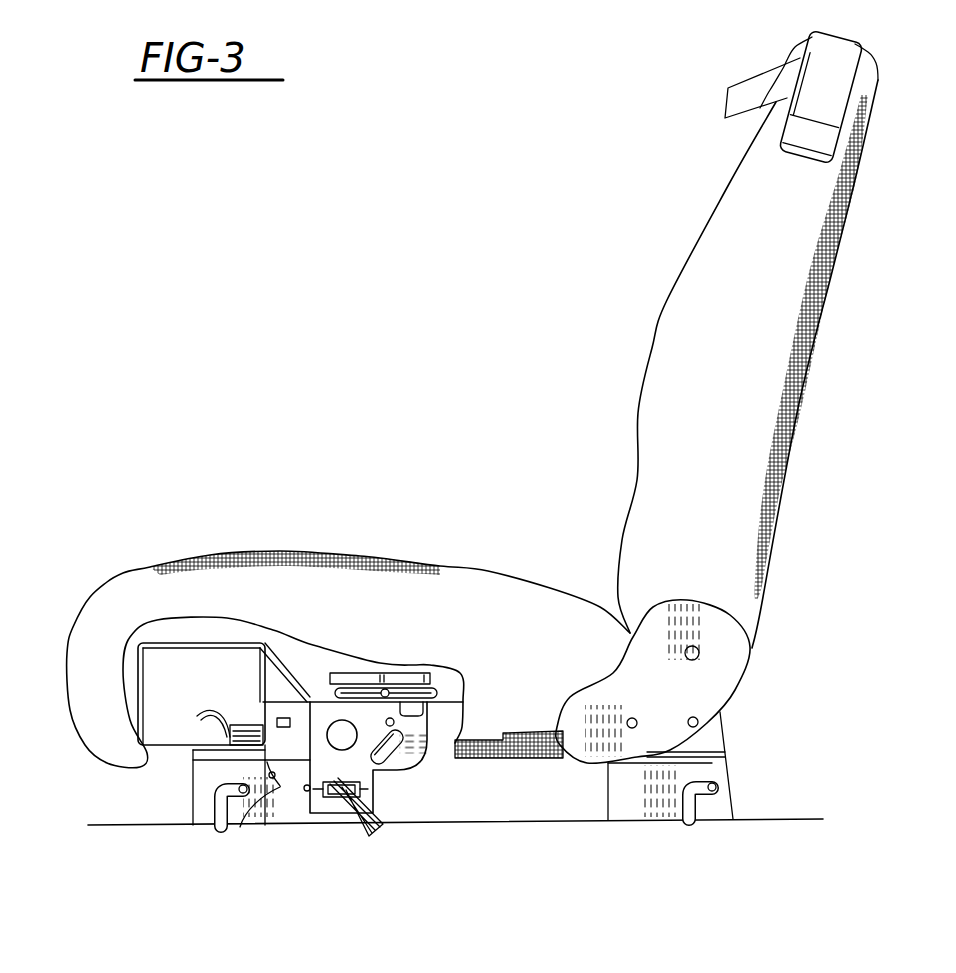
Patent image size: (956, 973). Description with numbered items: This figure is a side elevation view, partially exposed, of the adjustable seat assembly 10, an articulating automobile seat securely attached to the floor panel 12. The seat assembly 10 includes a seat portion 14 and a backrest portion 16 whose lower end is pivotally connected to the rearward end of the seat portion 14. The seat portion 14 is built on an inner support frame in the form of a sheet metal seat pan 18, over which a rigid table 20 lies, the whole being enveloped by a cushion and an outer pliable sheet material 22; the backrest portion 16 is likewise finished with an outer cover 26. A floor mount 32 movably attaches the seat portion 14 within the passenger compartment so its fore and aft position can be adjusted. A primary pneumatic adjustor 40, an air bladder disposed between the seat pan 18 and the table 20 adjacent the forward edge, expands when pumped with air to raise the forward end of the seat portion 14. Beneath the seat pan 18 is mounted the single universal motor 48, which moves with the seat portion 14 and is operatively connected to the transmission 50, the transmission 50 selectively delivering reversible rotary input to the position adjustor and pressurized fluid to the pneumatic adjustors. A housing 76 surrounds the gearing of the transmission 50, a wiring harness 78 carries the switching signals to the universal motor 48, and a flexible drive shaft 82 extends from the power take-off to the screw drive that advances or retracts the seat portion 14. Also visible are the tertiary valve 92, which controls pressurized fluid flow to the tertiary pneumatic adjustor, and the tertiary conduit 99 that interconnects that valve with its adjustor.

The adjustable seat assembly 10 is at (320, 312).
The floor panel 12 is at (772, 818).
The seat portion 14 is at (327, 613).
The backrest portion 16 is at (700, 339).
The seat pan 18 is at (200, 642).
The table 20 is at (356, 673).
The sheet material 22 is at (488, 572).
The outer cover 26 is at (688, 252).
The floor mount 32 is at (170, 808).
The primary pneumatic adjustor 40 is at (420, 688).
The universal motor 48 is at (338, 744).
The transmission 50 is at (382, 795).
The housing 76 is at (240, 823).
The wiring harness 78 is at (368, 817).
The flexible drive shaft 82 is at (398, 770).
The tertiary valve 92 is at (252, 725).
The tertiary conduit 99 is at (197, 718).